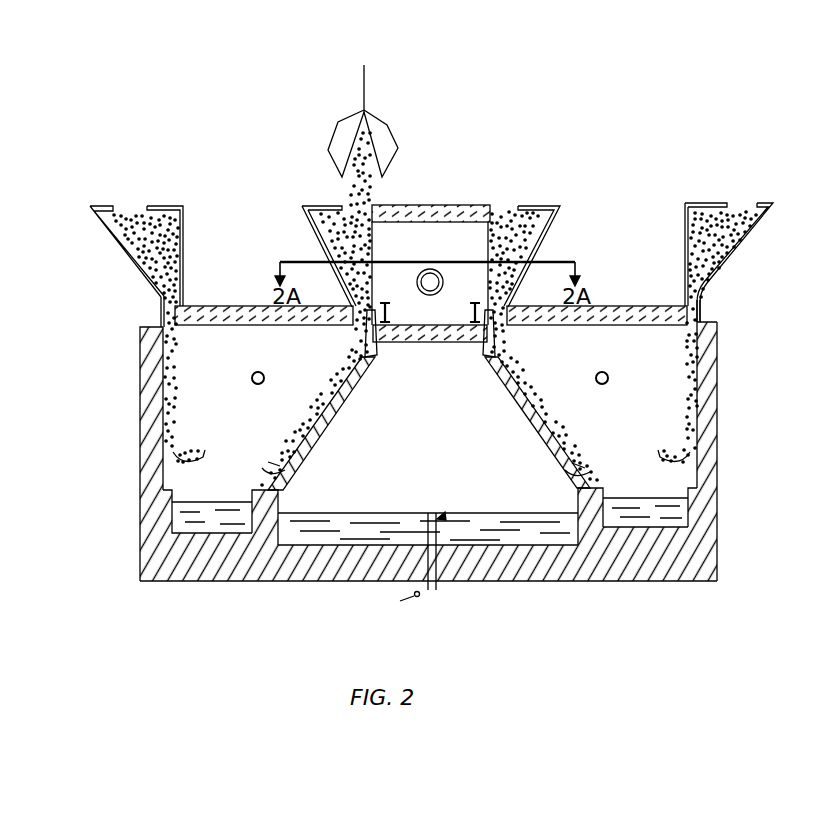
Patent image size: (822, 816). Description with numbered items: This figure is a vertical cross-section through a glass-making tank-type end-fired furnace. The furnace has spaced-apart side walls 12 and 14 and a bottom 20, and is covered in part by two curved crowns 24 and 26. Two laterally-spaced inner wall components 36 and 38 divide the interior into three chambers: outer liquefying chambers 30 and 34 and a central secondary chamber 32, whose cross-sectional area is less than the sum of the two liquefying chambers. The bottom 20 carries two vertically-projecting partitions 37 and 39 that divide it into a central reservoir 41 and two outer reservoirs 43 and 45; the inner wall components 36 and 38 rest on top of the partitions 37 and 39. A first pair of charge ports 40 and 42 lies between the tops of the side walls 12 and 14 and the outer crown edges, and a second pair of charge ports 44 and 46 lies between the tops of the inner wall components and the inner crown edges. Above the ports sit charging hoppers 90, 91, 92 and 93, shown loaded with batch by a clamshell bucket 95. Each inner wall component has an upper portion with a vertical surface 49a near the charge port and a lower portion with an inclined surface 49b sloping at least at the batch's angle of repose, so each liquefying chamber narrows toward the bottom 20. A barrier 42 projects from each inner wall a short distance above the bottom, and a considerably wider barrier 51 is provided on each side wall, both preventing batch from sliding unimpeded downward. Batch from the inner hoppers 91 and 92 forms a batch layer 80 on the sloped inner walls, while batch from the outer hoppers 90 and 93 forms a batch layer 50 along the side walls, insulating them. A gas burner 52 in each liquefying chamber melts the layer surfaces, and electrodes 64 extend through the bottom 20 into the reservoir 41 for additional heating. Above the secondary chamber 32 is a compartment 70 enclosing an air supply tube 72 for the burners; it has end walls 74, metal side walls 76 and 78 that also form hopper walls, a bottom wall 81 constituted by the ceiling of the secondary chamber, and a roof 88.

The first side wall 12 is at (142, 440).
The second side wall 14 is at (720, 430).
The bottom 20 is at (462, 572).
The crown 24 is at (612, 306).
The crown 26 is at (237, 306).
The liquefying chamber 30 is at (197, 350).
The secondary chamber 32 is at (490, 361).
The liquefying chamber 34 is at (697, 380).
The inner wall component 36 is at (338, 406).
The partition 37 is at (282, 497).
The inner wall component 38 is at (533, 421).
The partition 39 is at (578, 492).
The charge port 40 is at (163, 312).
The central reservoir 41 is at (383, 528).
The charge port / barrier 42 is at (700, 312).
The outer reservoir 43 is at (218, 507).
The charge port 44 is at (362, 308).
The outer reservoir 45 is at (650, 512).
The charge port 46 is at (502, 293).
The vertical surface 49a is at (363, 330).
The inclined surface 49b is at (313, 418).
The batch layer 50 is at (170, 374).
The barrier 51 is at (200, 458).
The gas burner 52 is at (258, 372).
The electrodes 64 is at (444, 514).
The compartment 70 is at (441, 256).
The air supply tube 72 is at (430, 296).
The end wall of compartment 74 is at (424, 202).
The side wall of compartment 76 is at (372, 243).
The side wall of compartment 78 is at (490, 245).
The batch layer 80 is at (332, 383).
The bottom wall of compartment 81 is at (430, 340).
The roof 88 is at (405, 233).
The outer charging hopper 90 is at (130, 248).
The inner charging hopper 91 is at (330, 247).
The inner charging hopper 92 is at (543, 243).
The outer charging hopper 93 is at (735, 243).
The clamshell bucket 95 is at (382, 128).